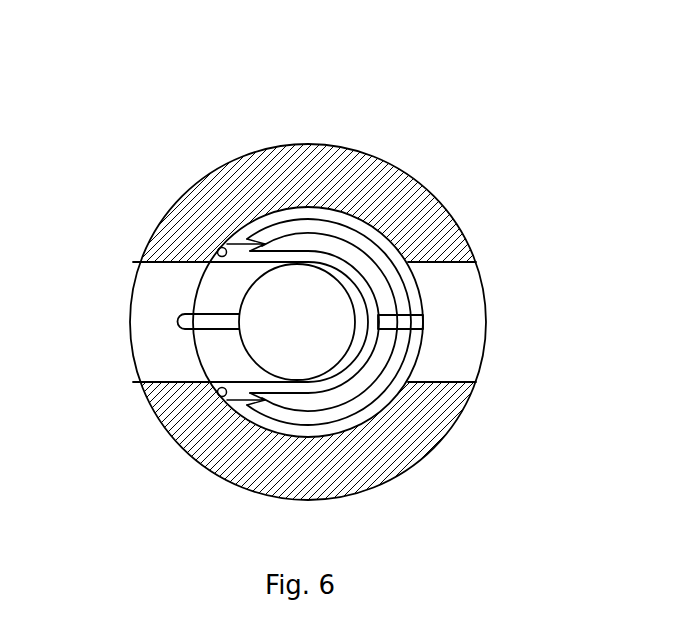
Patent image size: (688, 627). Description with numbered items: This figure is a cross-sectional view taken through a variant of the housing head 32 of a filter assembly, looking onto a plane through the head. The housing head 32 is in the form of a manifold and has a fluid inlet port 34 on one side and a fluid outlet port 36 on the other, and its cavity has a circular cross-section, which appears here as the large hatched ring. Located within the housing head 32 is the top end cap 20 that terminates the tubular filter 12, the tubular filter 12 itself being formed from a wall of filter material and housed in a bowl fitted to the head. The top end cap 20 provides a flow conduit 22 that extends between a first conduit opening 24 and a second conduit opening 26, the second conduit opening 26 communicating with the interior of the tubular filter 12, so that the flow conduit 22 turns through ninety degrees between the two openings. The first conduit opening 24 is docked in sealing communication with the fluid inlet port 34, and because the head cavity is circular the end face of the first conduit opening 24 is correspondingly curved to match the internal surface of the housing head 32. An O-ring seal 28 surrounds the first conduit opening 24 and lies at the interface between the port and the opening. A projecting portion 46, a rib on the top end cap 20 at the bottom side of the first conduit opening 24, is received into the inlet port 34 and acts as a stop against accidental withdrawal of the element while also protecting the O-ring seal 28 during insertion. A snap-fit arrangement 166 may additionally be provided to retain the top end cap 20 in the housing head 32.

The tubular filter 12 is at (392, 261).
The top end cap 20 is at (354, 382).
The flow conduit 22 is at (337, 270).
The first conduit opening 24 is at (205, 357).
The second conduit opening 26 is at (287, 332).
The O-ring seal 28 is at (218, 250).
The housing head 32 is at (200, 178).
The fluid inlet port 34 is at (160, 292).
The fluid outlet port 36 is at (460, 318).
The projecting portion 46 is at (185, 322).
The snap-fit arrangement 166 is at (407, 325).